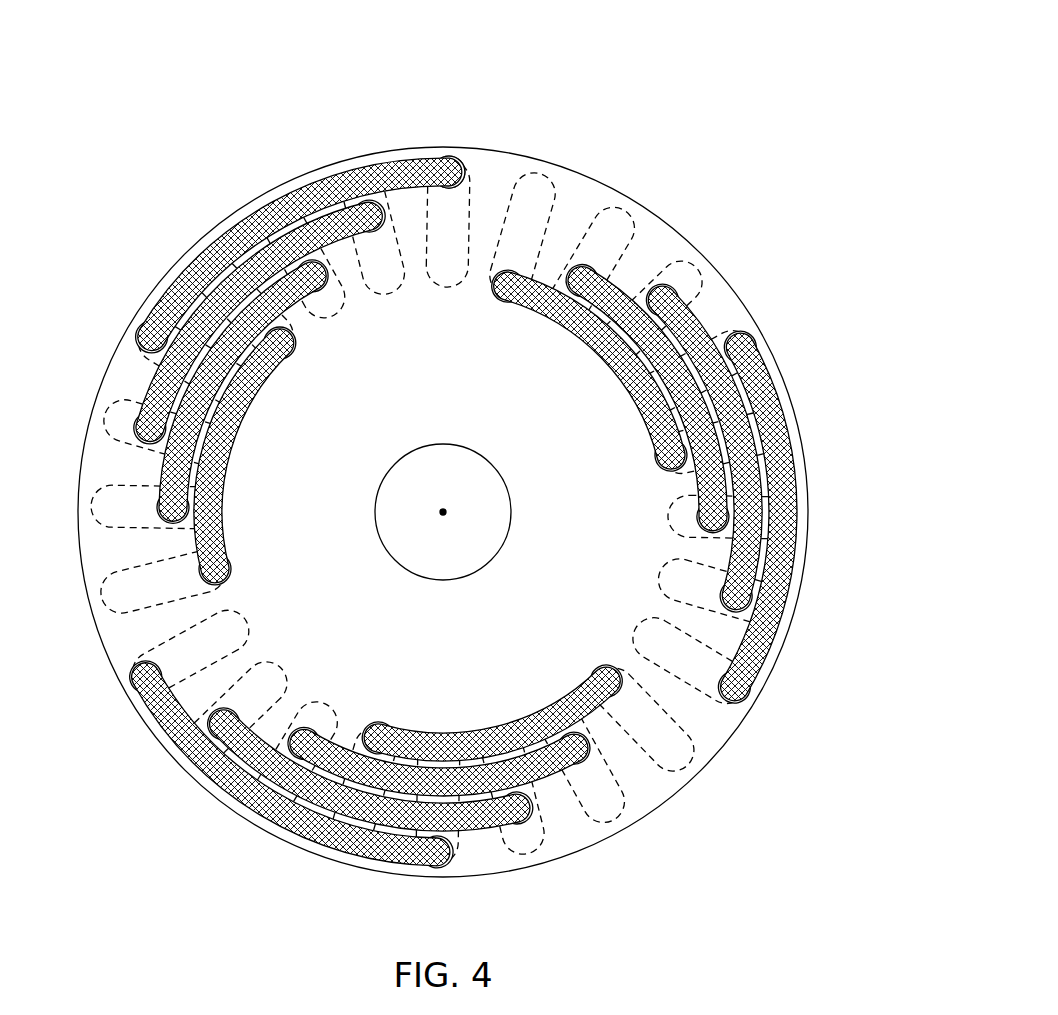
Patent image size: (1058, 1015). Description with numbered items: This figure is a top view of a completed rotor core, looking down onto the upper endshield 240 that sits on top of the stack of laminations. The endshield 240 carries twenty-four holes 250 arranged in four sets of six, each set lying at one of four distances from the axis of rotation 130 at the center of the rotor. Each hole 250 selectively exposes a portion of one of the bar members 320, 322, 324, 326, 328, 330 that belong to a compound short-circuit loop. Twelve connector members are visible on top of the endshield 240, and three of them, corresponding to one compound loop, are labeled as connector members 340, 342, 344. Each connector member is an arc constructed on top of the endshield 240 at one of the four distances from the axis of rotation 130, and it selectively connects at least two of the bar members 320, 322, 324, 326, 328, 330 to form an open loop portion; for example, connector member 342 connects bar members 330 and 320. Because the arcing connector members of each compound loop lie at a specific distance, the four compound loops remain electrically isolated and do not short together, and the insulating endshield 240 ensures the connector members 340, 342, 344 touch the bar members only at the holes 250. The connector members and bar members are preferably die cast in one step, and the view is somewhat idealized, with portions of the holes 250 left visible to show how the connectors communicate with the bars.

The endshield 240 is at (683, 68).
The hole 250 is at (462, 170).
The axis of rotation 130 is at (443, 512).
The bar member 320 is at (122, 417).
The bar member 322 is at (253, 708).
The bar member 324 is at (530, 838).
The bar member 326 is at (703, 564).
The bar member 328 is at (693, 277).
The bar member 330 is at (385, 238).
The connector member 340 is at (482, 820).
The connector member 342 is at (158, 382).
The connector member 344 is at (700, 330).